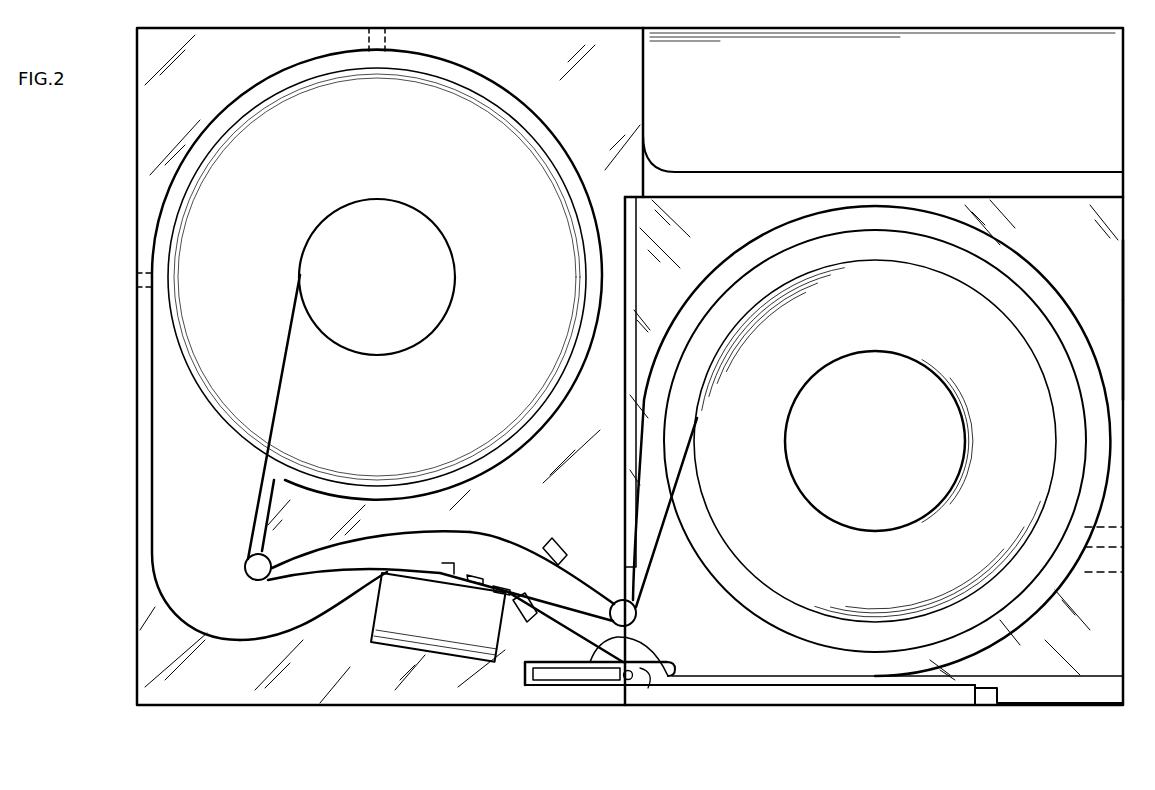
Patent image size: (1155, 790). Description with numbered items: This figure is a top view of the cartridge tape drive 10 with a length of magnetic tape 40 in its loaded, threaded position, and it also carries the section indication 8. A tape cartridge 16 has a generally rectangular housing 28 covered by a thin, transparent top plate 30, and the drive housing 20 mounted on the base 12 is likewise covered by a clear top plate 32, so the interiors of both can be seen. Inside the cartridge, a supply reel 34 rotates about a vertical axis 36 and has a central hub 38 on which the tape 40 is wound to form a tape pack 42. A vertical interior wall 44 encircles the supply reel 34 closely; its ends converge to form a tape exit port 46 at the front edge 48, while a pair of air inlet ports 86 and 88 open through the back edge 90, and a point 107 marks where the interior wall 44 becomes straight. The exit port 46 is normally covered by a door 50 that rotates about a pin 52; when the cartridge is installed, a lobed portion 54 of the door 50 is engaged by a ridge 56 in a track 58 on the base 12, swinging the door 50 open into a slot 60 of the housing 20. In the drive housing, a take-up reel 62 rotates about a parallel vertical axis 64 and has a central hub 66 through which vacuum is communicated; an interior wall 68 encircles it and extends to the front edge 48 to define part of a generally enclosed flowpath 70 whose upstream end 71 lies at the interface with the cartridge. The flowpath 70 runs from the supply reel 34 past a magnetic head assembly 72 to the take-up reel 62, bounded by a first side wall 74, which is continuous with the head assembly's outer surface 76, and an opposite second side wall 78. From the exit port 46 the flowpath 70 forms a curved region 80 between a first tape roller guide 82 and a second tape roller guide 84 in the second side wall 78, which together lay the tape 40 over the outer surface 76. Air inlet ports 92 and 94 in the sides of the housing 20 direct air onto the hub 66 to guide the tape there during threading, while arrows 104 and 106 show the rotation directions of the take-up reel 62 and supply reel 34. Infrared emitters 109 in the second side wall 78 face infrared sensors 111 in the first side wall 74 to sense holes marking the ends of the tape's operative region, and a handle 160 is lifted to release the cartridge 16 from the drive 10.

The section line 8- 8 is at (944, 732).
The cartridge tape drive 10 is at (460, 712).
The base 12 is at (1105, 130).
The tape cartridge 16 is at (1123, 240).
The housing 20 is at (210, 700).
The generally rectangular housing 28 is at (1112, 272).
The top plate 30 is at (1105, 640).
The top plate 32 is at (148, 150).
The supply reel 34 is at (1070, 412).
The vertical axis 36 is at (885, 450).
The central hub 38 is at (953, 420).
The magnetic tape 40 is at (281, 402).
The tape pack 42 is at (1040, 462).
The interior wall 44 is at (697, 292).
The tape exit port 46 is at (658, 690).
The front edge 48 is at (624, 525).
The door 50 is at (570, 690).
The pin 52 is at (612, 688).
The lobed portion 54 is at (636, 690).
The ridge 56 is at (778, 690).
The track 58 is at (822, 690).
The slot 60 is at (540, 690).
The take-up reel 62 is at (468, 78).
The vertical axis 64 is at (375, 282).
The central hub 66 is at (445, 268).
The interior wall 68 is at (153, 535).
The flowpath 70 is at (322, 565).
The upstream end 71 is at (595, 648).
The magnetic head assembly 72 is at (400, 640).
The first side wall 74 is at (218, 640).
The outer surface 76 is at (452, 580).
The second side wall 78 is at (378, 540).
The curved region 80 is at (478, 542).
The first tape roller guide 82 is at (613, 602).
The second tape roller guide 84 is at (266, 558).
The air inlet port 86 is at (1113, 583).
The air inlet port 88 is at (1113, 542).
The back edge 90 is at (1110, 326).
The air inlet port 92 is at (140, 280).
The air inlet port 94 is at (380, 28).
The arrow 104 is at (412, 262).
The arrow 106 is at (840, 437).
The point 107 is at (875, 690).
The infrared emitters 109 is at (546, 548).
The infrared sensors 111 is at (527, 622).
The handle 160 is at (975, 708).